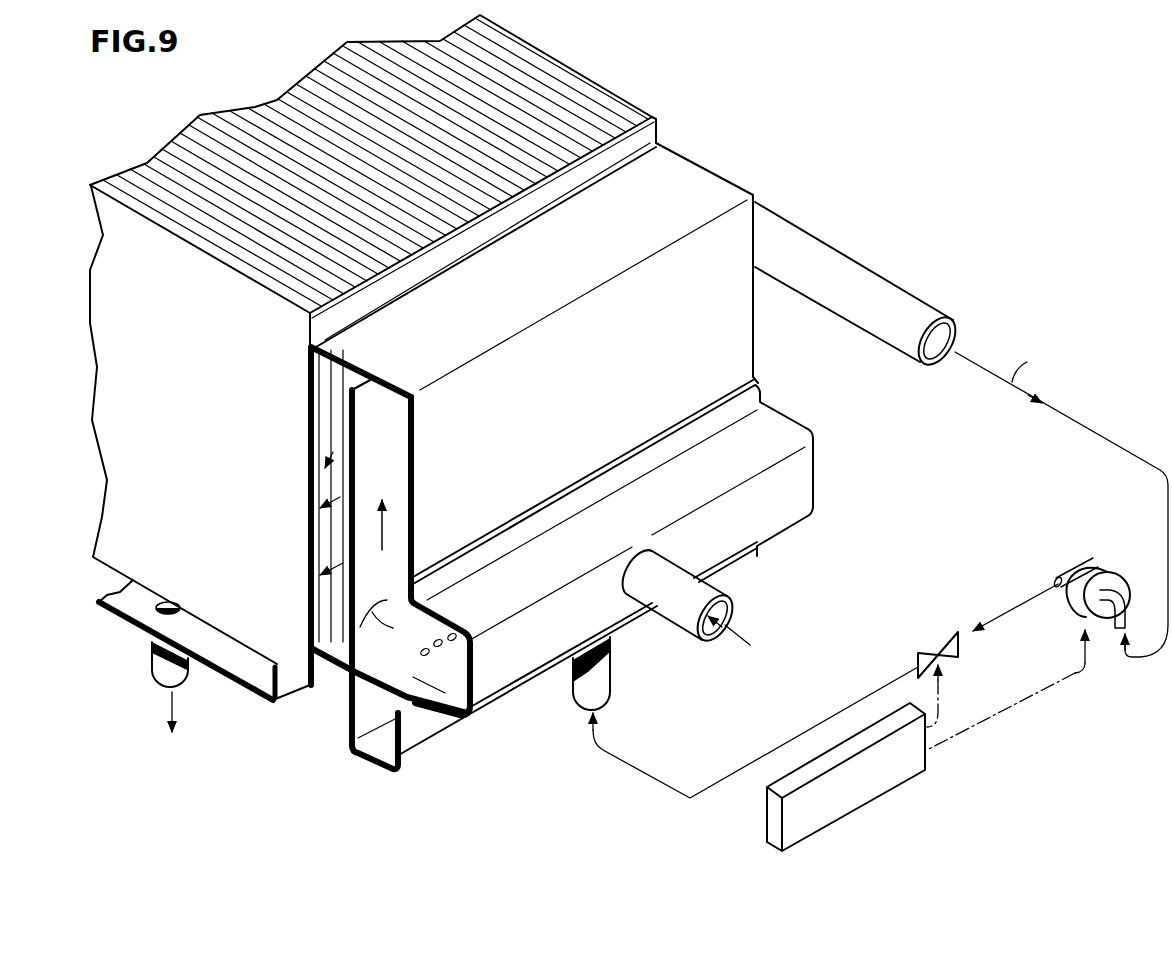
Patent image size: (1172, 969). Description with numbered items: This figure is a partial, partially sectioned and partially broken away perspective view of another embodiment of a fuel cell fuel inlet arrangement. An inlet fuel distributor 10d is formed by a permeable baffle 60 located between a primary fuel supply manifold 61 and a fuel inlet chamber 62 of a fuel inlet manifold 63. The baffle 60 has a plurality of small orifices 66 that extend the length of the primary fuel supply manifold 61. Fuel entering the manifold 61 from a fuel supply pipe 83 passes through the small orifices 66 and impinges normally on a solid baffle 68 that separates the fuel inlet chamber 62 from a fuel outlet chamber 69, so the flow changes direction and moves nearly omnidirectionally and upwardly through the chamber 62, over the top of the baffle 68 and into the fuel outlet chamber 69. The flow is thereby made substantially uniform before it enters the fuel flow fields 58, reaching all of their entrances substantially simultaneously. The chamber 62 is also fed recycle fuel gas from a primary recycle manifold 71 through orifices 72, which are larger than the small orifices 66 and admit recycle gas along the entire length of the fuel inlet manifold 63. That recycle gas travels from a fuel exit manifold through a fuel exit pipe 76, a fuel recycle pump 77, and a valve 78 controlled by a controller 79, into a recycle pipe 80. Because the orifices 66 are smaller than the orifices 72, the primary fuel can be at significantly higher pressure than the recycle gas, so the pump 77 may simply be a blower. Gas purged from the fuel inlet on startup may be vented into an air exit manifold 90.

The fuel flow fields 58 is at (123, 287).
The fuel inlet manifold 63 is at (690, 187).
The solid baffle 68 is at (373, 422).
The fuel outlet chamber 69 is at (337, 420).
The fuel inlet chamber 62 is at (407, 530).
The small orifices 66 is at (450, 643).
The primary fuel supply manifold 61 is at (452, 682).
The permeable baffle 60 is at (460, 715).
The primary recycle manifold 71 is at (423, 733).
The orifices 72 is at (392, 672).
The air exit manifold 90 is at (243, 660).
The inlet fuel distributor 10d is at (835, 491).
The fuel supply pipe 83 is at (673, 587).
The recycle pipe 80 is at (597, 683).
The fuel exit pipe 76 is at (907, 313).
The fuel recycle pump 77 is at (1098, 565).
The valve 78 is at (937, 652).
The controller 79 is at (868, 792).